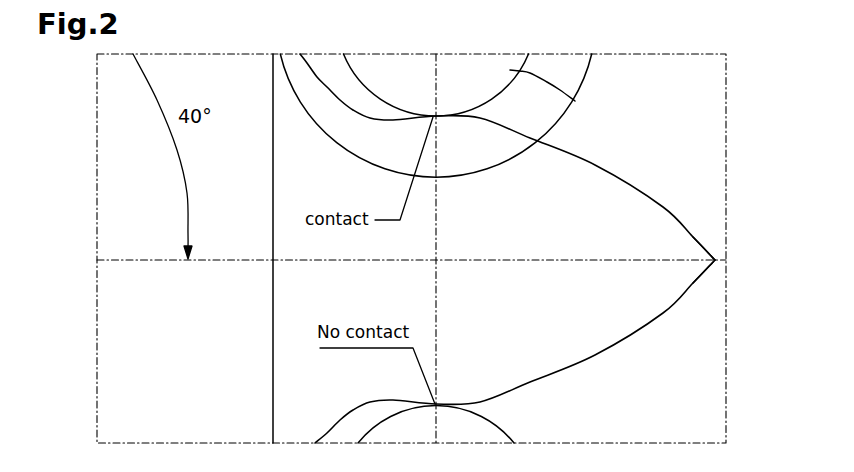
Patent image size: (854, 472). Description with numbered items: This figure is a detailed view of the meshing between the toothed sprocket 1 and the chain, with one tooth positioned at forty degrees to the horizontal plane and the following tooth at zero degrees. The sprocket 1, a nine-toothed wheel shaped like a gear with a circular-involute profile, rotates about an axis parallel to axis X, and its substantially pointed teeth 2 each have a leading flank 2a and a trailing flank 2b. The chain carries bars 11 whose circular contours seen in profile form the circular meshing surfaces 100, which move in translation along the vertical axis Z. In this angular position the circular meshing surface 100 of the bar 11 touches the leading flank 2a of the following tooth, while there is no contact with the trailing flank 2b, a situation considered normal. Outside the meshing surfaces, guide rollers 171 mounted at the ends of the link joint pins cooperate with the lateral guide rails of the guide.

The toothed sprocket 1 is at (530, 248).
The teeth 2 is at (688, 228).
The leading flank 2a is at (498, 122).
The trailing flank 2b is at (595, 355).
The bars 11 is at (478, 89).
The circular meshing surfaces 100 is at (576, 101).
The guide rollers 171 is at (592, 72).